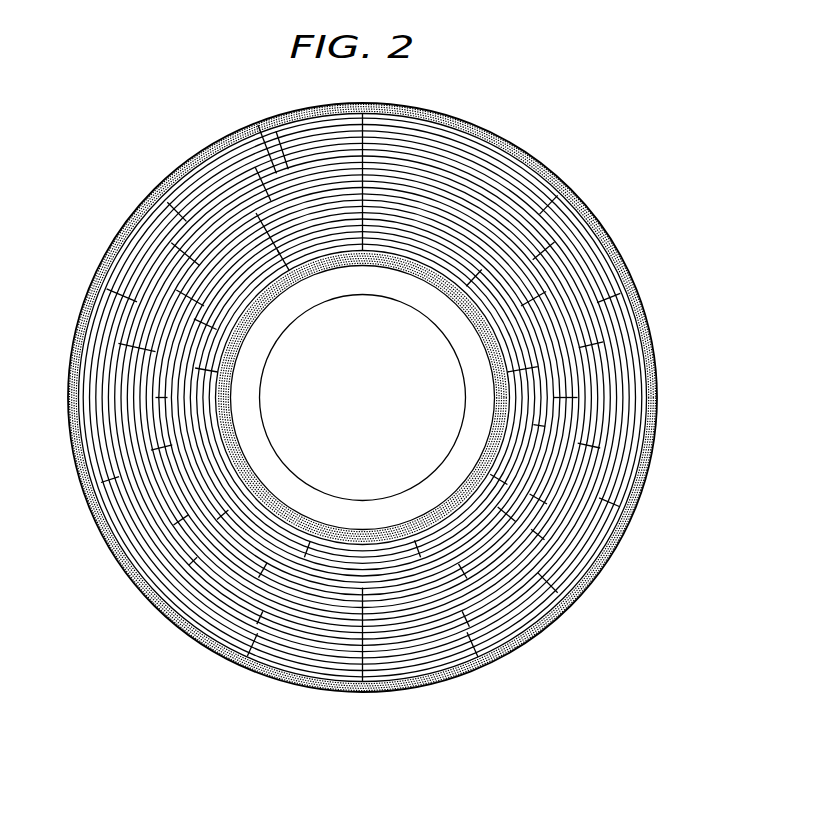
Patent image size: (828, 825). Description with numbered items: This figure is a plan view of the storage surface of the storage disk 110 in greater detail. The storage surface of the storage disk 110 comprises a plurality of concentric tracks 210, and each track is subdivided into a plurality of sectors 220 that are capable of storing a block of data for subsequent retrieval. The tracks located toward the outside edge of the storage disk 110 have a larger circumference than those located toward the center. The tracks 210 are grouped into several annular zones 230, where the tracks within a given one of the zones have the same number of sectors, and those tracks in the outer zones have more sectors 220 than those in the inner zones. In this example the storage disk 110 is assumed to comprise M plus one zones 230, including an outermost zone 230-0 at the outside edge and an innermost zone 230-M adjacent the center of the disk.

The storage disk 110 is at (128, 179).
The concentric tracks 210 is at (537, 598).
The sectors 220 is at (470, 125).
The annular zones 230 is at (579, 441).
The outermost zone 230-0 is at (258, 125).
The innermost zone 230-M is at (286, 254).